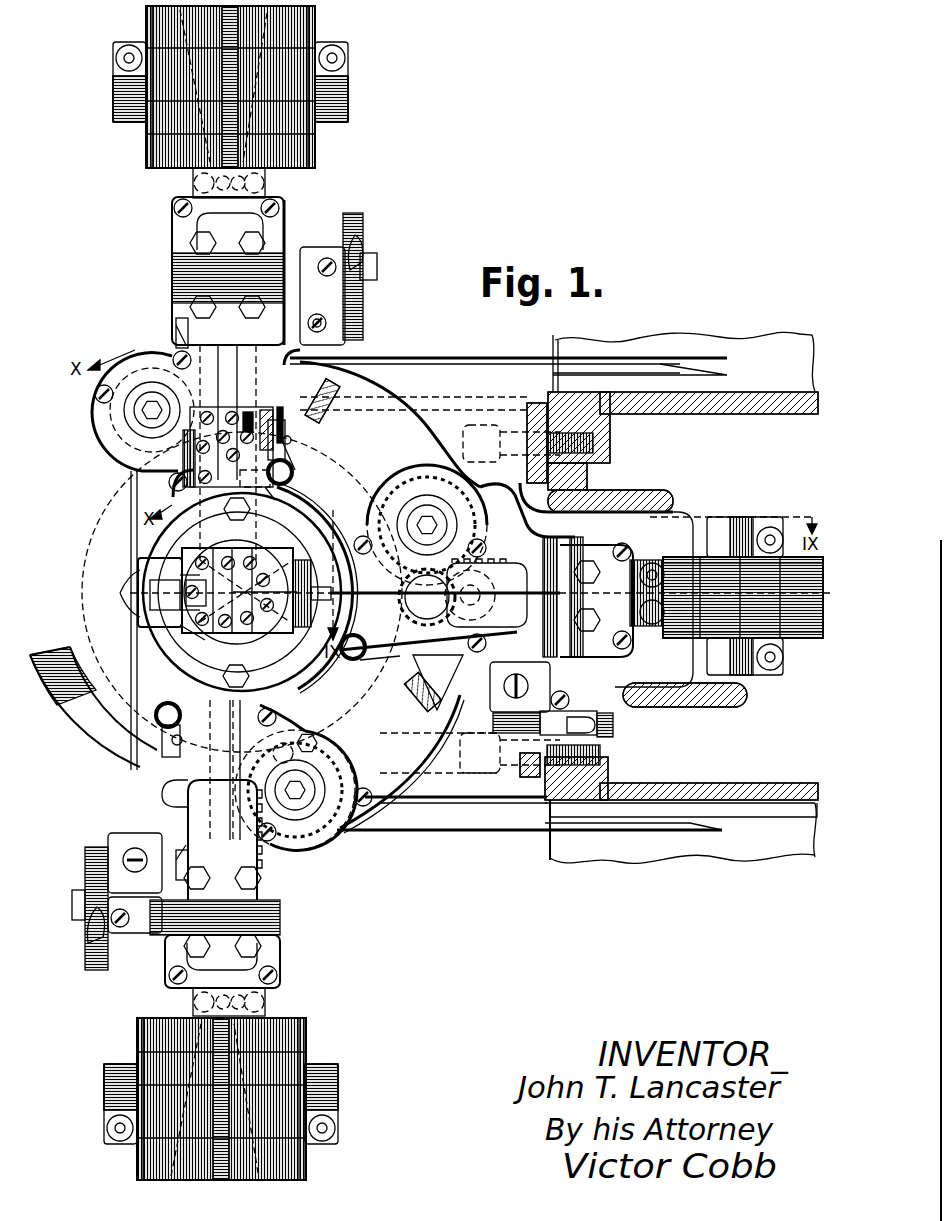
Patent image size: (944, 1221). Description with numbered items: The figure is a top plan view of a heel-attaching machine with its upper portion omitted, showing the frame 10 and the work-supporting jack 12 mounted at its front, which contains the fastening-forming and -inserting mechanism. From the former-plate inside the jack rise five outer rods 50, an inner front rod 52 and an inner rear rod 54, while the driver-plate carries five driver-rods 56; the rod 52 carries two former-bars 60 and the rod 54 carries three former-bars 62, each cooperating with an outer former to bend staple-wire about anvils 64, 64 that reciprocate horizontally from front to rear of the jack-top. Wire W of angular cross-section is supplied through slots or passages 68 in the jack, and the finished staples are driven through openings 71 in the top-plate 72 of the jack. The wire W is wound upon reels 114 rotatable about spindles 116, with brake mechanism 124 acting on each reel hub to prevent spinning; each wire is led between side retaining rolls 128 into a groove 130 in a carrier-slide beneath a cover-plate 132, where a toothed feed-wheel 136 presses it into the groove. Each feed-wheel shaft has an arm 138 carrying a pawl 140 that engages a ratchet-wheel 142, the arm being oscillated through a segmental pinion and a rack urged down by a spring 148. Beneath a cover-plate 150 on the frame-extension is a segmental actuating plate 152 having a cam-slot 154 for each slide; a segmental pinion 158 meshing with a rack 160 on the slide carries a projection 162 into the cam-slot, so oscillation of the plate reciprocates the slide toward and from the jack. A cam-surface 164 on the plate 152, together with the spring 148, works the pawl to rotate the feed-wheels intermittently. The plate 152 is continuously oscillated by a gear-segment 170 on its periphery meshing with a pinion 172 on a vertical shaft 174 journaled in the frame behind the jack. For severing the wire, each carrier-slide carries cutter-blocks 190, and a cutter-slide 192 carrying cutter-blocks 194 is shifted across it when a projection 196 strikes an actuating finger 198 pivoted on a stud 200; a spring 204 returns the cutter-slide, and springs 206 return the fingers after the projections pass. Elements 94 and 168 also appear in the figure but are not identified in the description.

The frame 10 is at (550, 850).
The work-supporting jack 12 is at (272, 540).
The outer rods 50 is at (198, 556).
The inner front rod 52 is at (175, 555).
The inner rear rod 54 is at (261, 589).
The driver-rods 56 is at (228, 637).
The former-bars 60 is at (194, 594).
The former-bars 62 is at (268, 575).
The anvils 64 is at (140, 593).
The slots or passages 68 is at (228, 556).
The opening or passage 71 is at (231, 596).
The top-plate 72 is at (181, 636).
The chuck hub 94 is at (302, 628).
The reels 114 is at (146, 13).
The spindles 116 is at (346, 86).
The brake mechanism 124 is at (340, 60).
The side retaining rolls 128 is at (196, 183).
The groove 130 is at (170, 327).
The cover-plate 132 is at (176, 222).
The feed-wheels 136 is at (262, 208).
The arm 138 is at (362, 296).
The pawl 140 is at (362, 252).
The ratchet-wheel 142 is at (352, 222).
The spring 148 is at (345, 322).
The cover-plate 150 is at (395, 402).
The segmental actuating plate 152 is at (160, 785).
The cam-slot 154 is at (165, 798).
The segmental pinion 158 is at (482, 462).
The rack 160 is at (186, 322).
The projection 162 is at (130, 455).
The cam-surface 164 is at (316, 402).
The slide channel 168 is at (591, 497).
The gear-segment 170 is at (350, 660).
The pinion 172 is at (438, 682).
The vertical shaft 174 is at (596, 572).
The cutter-block 190 is at (232, 410).
The cutter-slide 192 is at (192, 480).
The cutter-blocks 194 is at (296, 438).
The projection 196 is at (257, 490).
The actuating finger 198 is at (279, 498).
The stud 200 is at (292, 478).
The spring 204 is at (248, 410).
The springs 206 is at (170, 730).
The wire W is at (240, 30).